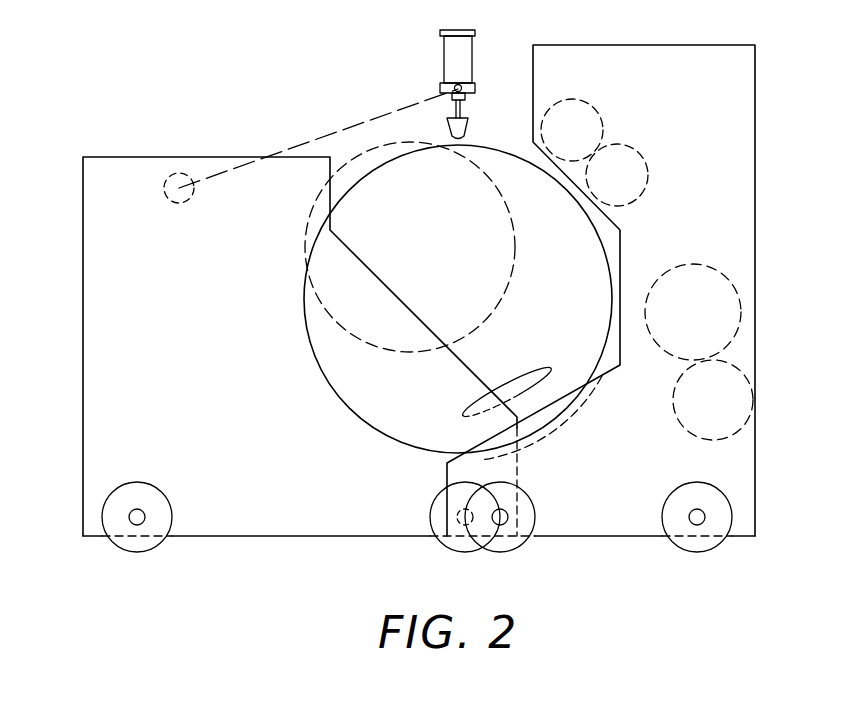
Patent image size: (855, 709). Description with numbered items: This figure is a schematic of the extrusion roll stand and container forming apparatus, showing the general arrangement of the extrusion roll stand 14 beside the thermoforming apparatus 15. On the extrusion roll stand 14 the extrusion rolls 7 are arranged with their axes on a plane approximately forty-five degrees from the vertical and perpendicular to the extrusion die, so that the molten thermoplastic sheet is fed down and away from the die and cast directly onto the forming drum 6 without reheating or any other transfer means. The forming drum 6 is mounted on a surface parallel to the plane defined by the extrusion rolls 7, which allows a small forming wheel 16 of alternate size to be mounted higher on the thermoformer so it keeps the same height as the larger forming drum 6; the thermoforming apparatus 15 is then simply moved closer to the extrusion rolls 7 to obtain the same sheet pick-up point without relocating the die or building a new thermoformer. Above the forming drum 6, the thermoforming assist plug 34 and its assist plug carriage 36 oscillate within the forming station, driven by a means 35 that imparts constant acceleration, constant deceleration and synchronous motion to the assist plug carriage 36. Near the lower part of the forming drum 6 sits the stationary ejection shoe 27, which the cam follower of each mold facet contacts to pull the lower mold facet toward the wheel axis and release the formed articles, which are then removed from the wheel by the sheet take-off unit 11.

The forming drum 6 is at (490, 145).
The extrusion roll 7 is at (642, 155).
The sheet take-off unit 11 is at (730, 283).
The extrusion roll stand 14 is at (755, 448).
The thermoforming apparatus 15 is at (83, 427).
The small forming wheel 16 is at (312, 212).
The stationary ejection shoe 27 is at (533, 372).
The thermoforming assist plug 34 is at (467, 120).
The drive means 35 is at (172, 177).
The assist plug carriage 36 is at (302, 140).